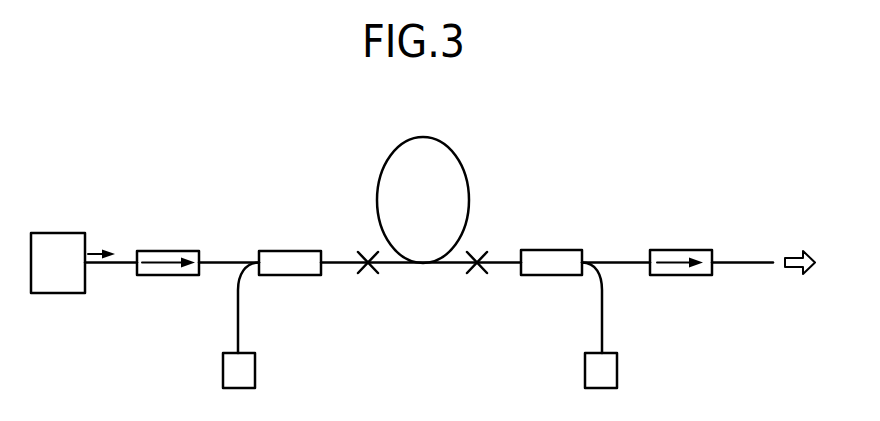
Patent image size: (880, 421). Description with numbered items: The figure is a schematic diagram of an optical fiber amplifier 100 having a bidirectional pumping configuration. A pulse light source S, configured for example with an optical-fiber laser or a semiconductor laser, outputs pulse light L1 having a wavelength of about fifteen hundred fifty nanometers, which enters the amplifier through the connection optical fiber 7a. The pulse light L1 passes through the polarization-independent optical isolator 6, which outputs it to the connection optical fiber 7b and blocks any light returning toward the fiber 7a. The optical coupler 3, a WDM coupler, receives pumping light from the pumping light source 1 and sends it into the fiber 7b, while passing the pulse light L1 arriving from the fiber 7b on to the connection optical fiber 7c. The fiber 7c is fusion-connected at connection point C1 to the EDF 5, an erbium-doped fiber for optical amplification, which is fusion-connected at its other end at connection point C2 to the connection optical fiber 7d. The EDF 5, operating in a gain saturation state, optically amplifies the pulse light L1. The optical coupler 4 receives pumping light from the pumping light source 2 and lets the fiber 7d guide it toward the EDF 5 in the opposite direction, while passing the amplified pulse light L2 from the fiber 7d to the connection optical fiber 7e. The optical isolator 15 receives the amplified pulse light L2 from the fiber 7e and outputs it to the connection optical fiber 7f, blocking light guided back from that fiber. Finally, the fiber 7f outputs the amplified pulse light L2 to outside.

The optical fiber amplifier 100 is at (628, 139).
The pulse light source S is at (56, 232).
The pulse light L1 is at (100, 251).
The connection optical fiber 7a is at (131, 262).
The optical isolator 6 is at (172, 250).
The connection optical fiber 7b is at (237, 262).
The optical coupler 3 is at (292, 250).
The pumping light source 1 is at (255, 370).
The connection optical fiber 7c is at (348, 262).
The connection point C1 is at (368, 293).
The EDF 5 is at (456, 148).
The connection point C2 is at (475, 293).
The connection optical fiber 7d is at (500, 262).
The optical coupler 4 is at (549, 250).
The connection optical fiber 7e is at (620, 262).
The pumping light source 2 is at (617, 370).
The optical isolator 15 is at (680, 250).
The connection optical fiber 7f is at (746, 262).
The amplified pulse light L2 is at (795, 250).